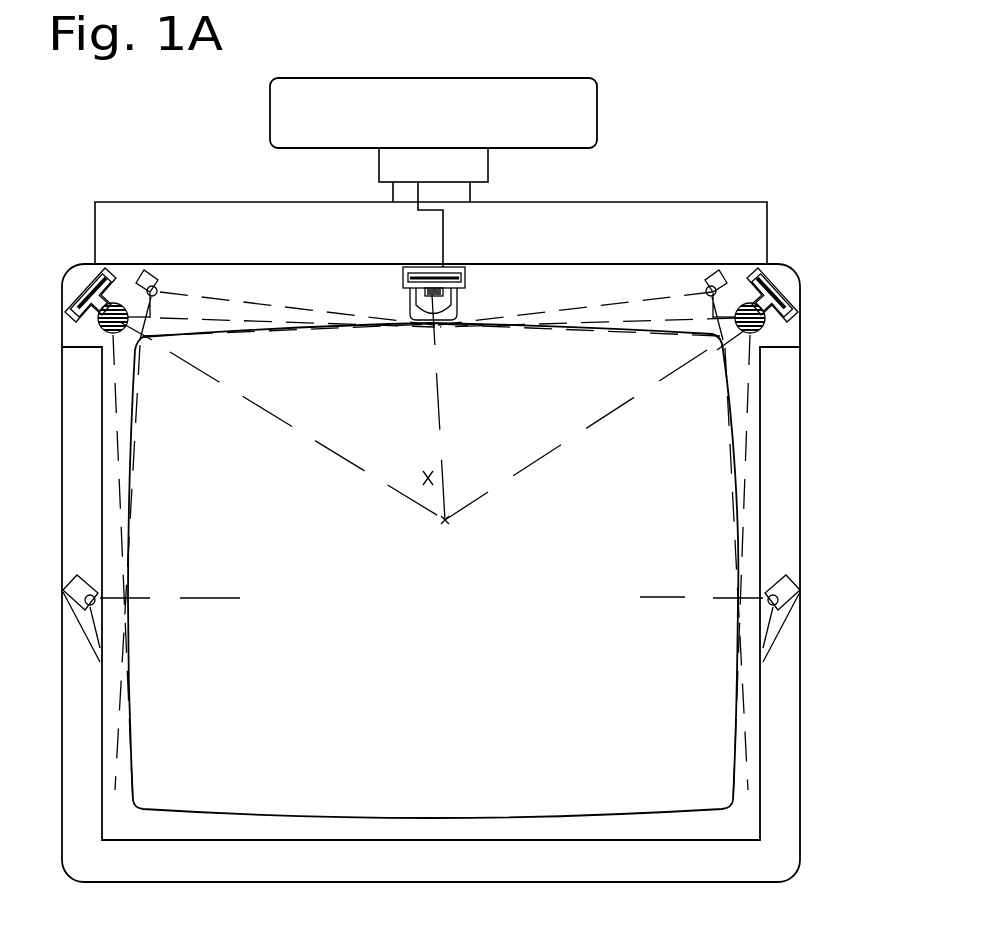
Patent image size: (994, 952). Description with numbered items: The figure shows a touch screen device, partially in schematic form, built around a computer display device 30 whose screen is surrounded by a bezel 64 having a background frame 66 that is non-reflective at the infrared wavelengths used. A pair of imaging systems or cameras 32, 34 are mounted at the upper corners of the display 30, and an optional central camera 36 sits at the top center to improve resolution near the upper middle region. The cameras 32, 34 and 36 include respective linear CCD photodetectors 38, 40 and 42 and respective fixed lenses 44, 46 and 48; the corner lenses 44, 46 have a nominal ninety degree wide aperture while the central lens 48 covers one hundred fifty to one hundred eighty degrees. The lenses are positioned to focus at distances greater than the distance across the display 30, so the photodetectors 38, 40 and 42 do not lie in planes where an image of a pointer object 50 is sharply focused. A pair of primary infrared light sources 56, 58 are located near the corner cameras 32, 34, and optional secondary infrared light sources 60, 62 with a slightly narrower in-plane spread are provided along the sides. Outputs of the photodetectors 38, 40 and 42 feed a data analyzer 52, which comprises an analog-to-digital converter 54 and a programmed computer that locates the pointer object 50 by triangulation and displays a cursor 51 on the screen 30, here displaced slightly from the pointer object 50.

The computer display device 30 is at (312, 712).
The camera 32 is at (108, 285).
The camera 34 is at (748, 275).
The central camera 36 is at (466, 280).
The linear CCD photodetector 38 is at (77, 292).
The linear CCD photodetector 40 is at (780, 290).
The linear CCD photodetector 42 is at (448, 272).
The fixed lens 44 is at (112, 334).
The fixed lens 46 is at (730, 340).
The fixed lens 48 is at (426, 322).
The pointer object 50 is at (445, 520).
The cursor 51 is at (428, 468).
The data analyzer 52 is at (598, 97).
The analog-to-digital converter 54 is at (488, 158).
The primary infrared light source 56 is at (152, 280).
The primary infrared light source 58 is at (712, 278).
The secondary infrared light source 60 is at (88, 580).
The secondary infrared light source 62 is at (773, 580).
The bezel 64 is at (780, 476).
The background frame 66 is at (760, 443).